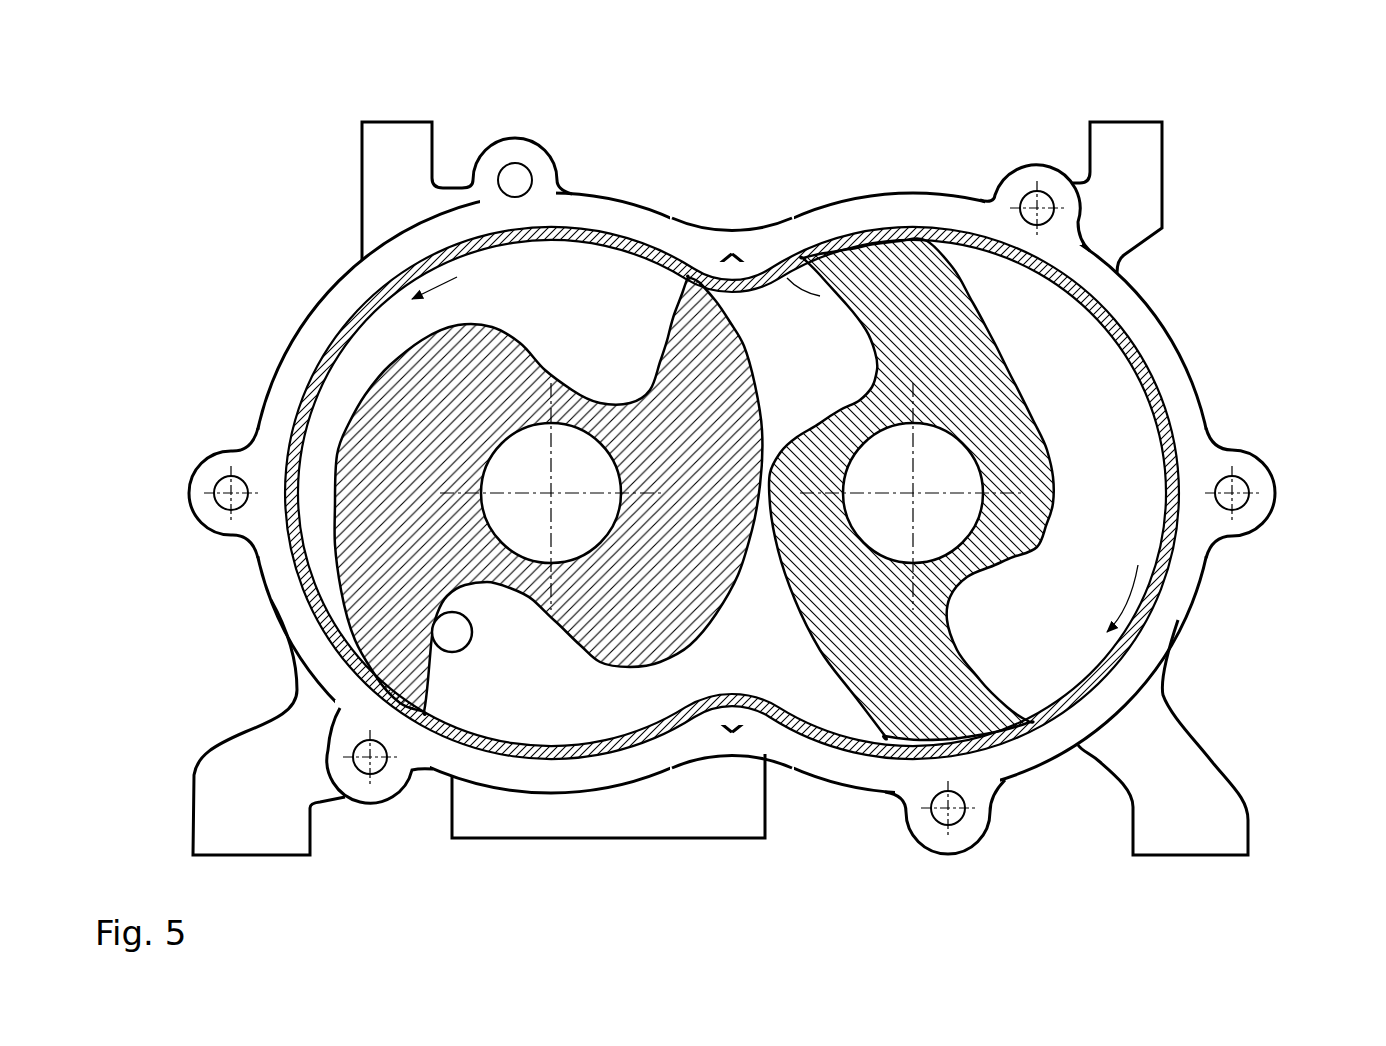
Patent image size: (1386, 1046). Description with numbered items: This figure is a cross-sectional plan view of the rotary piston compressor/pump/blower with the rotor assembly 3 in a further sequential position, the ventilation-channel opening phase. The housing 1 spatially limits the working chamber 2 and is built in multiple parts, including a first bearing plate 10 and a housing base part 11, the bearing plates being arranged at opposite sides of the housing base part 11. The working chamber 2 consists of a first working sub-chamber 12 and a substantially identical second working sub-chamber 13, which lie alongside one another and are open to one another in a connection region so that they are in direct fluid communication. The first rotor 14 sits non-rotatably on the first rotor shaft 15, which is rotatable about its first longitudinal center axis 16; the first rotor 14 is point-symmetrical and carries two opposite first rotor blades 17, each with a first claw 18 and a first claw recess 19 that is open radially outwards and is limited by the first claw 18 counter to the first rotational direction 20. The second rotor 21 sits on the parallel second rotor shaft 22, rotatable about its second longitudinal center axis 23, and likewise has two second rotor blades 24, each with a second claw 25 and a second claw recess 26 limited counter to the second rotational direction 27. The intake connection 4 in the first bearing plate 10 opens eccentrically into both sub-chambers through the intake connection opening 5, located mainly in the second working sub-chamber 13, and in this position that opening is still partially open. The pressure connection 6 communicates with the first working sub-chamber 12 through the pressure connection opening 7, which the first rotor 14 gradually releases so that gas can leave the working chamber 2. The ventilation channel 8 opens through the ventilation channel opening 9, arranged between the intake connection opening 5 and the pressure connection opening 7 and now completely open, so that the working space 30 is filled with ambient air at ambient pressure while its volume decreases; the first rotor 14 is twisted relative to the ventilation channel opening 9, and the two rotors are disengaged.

The housing 1 is at (318, 126).
The working chamber 2 is at (1140, 408).
The rotor assembly 3 is at (760, 650).
The intake connection 4 is at (640, 323).
The intake connection opening 5 is at (663, 342).
The pressure connection 6 is at (630, 683).
The pressure connection opening 7 is at (585, 650).
The ventilation channel 8 is at (438, 600).
The ventilation channel opening 9 is at (440, 630).
The first bearing plate 10 is at (1212, 427).
The housing base part 11 is at (1152, 356).
The first working sub-chamber 12 is at (515, 262).
The second working sub-chamber 13 is at (1070, 640).
The first rotor 14 is at (330, 460).
The first rotor shaft 15 is at (541, 543).
The first longitudinal center axis 16 is at (549, 494).
The first rotor blade 17 is at (737, 270).
The first claw 18 is at (684, 272).
The first claw recess 19 is at (648, 333).
The first rotational direction 20 is at (437, 287).
The second rotor 21 is at (1057, 523).
The second rotor shaft 22 is at (972, 486).
The second longitudinal center axis 23 is at (915, 497).
The second rotor blade 24 is at (918, 243).
The second claw 25 is at (826, 258).
The second claw recess 26 is at (784, 265).
The second rotational direction 27 is at (1145, 558).
The working space 30 is at (668, 691).